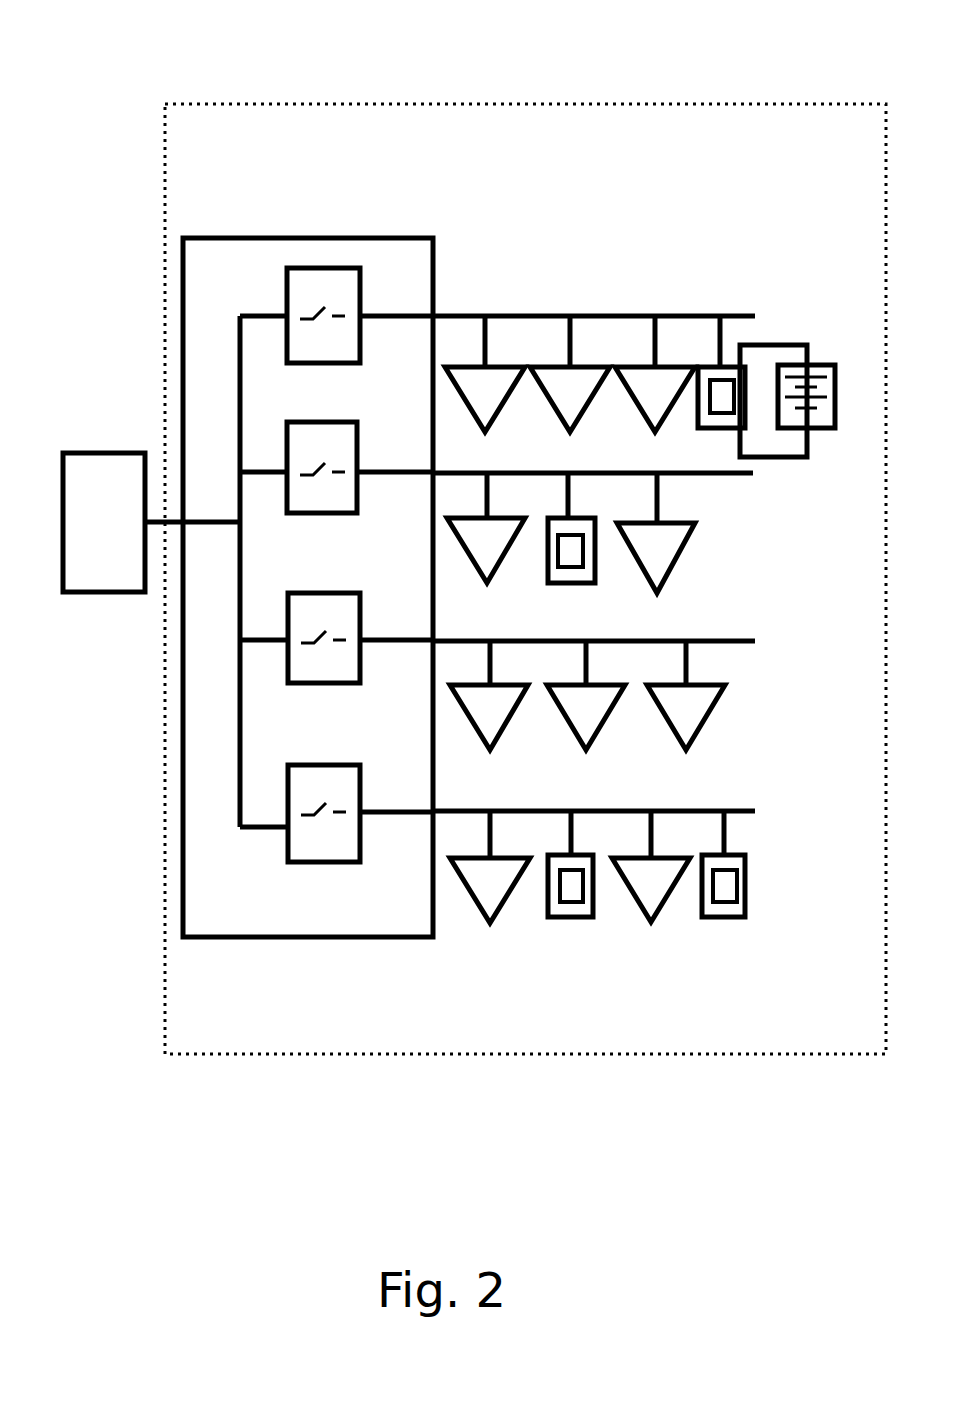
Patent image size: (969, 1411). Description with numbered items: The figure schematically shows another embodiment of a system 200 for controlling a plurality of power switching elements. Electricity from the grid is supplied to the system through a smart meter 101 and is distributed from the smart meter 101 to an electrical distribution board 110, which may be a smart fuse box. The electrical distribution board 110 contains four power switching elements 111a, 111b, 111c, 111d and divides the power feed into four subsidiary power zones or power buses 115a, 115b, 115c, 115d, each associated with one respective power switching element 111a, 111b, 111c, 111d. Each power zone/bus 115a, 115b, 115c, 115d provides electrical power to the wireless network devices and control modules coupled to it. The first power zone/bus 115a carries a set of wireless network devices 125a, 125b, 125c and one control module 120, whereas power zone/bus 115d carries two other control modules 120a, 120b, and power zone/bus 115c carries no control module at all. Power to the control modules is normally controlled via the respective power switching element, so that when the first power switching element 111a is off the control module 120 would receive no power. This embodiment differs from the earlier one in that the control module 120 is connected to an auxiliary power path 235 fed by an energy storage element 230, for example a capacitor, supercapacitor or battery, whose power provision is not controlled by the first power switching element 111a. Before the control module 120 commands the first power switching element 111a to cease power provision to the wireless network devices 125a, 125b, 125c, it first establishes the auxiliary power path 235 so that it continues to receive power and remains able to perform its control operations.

The system 200 is at (522, 103).
The smart meter 101 is at (88, 450).
The electrical distribution board 110 is at (220, 236).
The power switching element 111a is at (308, 266).
The power switching element 111b is at (340, 420).
The power switching element 111c is at (343, 592).
The power switching element 111d is at (337, 763).
The power zone/bus 115a is at (703, 316).
The power zone/bus 115b is at (712, 473).
The power zone/bus 115c is at (727, 641).
The power zone/bus 115d is at (740, 813).
The wireless network device 125a is at (460, 366).
The wireless network device 125b is at (540, 366).
The wireless network device 125c is at (630, 366).
The control module 120 is at (725, 366).
The control module 120a is at (583, 918).
The control module 120b is at (735, 918).
The energy storage element 230 is at (808, 430).
The auxiliary power path 235 is at (787, 340).